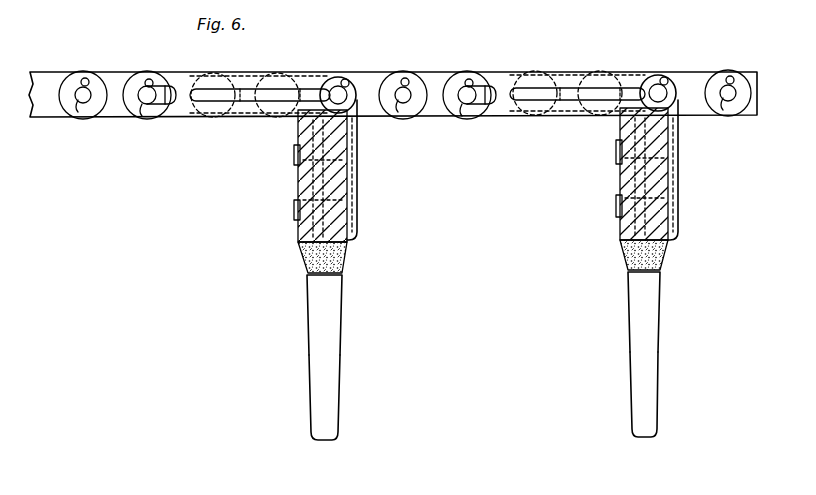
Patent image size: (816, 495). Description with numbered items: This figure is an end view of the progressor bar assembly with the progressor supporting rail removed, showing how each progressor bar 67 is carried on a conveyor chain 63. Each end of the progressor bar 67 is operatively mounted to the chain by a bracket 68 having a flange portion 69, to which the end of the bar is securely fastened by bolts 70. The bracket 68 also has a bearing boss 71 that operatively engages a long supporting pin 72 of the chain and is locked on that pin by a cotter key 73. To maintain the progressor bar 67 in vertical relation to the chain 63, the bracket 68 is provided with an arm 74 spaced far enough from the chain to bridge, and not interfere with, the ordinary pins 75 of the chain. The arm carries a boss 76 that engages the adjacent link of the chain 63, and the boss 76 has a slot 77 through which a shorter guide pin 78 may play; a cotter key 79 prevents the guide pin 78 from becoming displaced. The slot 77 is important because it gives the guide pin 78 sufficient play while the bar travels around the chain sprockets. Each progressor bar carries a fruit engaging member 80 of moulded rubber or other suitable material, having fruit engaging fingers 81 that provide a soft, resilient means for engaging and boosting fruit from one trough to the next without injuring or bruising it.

The conveyor chain 63 is at (103, 70).
The progressor bar 67 is at (297, 237).
The bracket 68 is at (359, 168).
The flange portion 69 is at (352, 238).
The bolt 70 is at (296, 207).
The bearing boss 71 is at (352, 82).
The supporting pin 72 is at (342, 97).
The cotter key 73 is at (344, 79).
The arm 74 is at (192, 104).
The pin 75 is at (272, 75).
The boss 76 is at (140, 78).
The slot 77 is at (172, 92).
The guide pin 78 is at (147, 97).
The cotter key 79 is at (466, 80).
The fruit engaging member 80 is at (342, 334).
The fruit engaging finger 81 is at (330, 392).